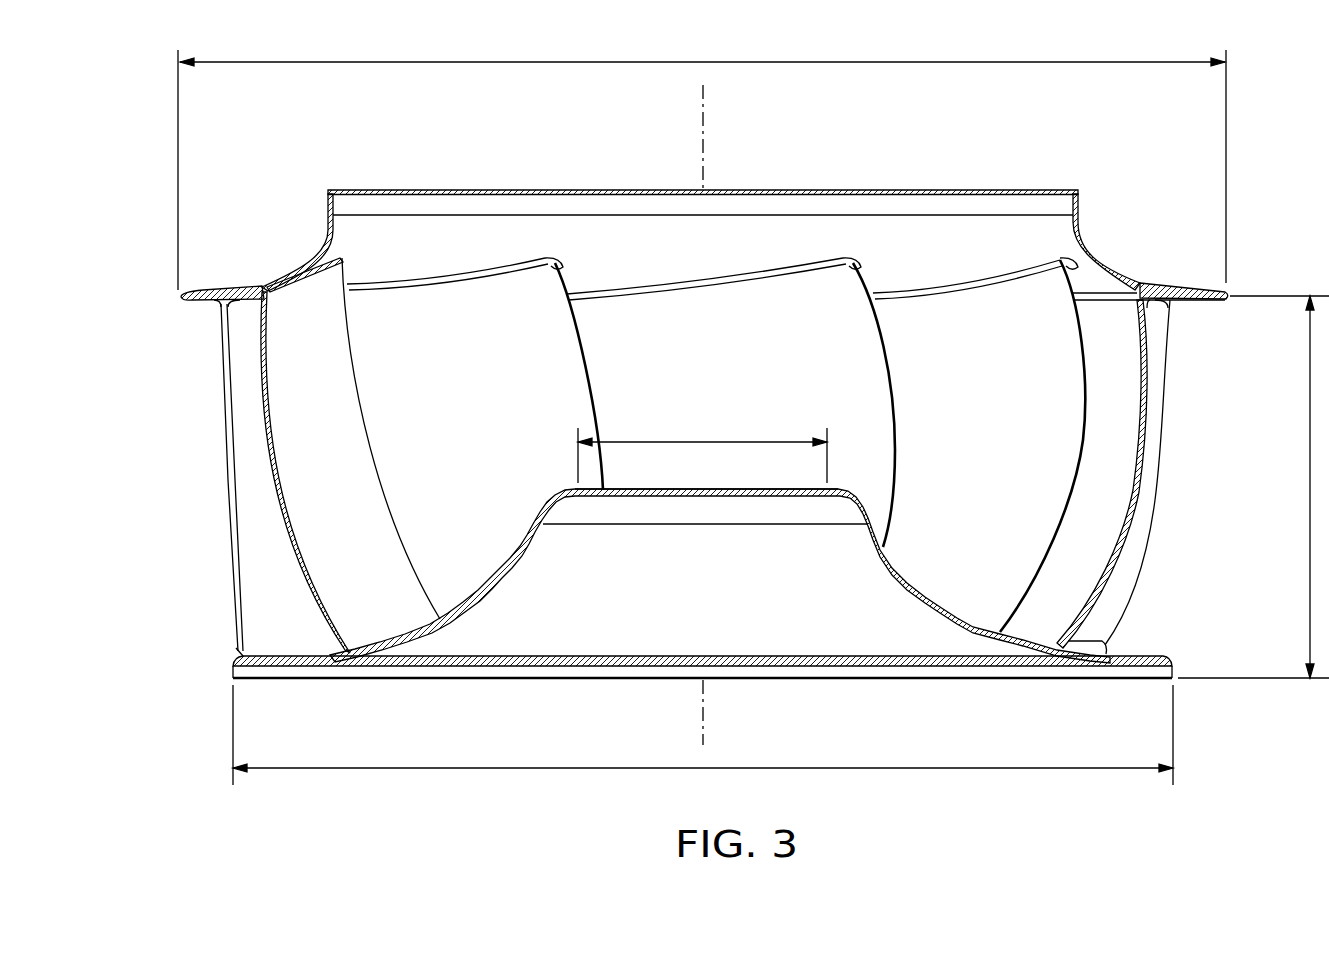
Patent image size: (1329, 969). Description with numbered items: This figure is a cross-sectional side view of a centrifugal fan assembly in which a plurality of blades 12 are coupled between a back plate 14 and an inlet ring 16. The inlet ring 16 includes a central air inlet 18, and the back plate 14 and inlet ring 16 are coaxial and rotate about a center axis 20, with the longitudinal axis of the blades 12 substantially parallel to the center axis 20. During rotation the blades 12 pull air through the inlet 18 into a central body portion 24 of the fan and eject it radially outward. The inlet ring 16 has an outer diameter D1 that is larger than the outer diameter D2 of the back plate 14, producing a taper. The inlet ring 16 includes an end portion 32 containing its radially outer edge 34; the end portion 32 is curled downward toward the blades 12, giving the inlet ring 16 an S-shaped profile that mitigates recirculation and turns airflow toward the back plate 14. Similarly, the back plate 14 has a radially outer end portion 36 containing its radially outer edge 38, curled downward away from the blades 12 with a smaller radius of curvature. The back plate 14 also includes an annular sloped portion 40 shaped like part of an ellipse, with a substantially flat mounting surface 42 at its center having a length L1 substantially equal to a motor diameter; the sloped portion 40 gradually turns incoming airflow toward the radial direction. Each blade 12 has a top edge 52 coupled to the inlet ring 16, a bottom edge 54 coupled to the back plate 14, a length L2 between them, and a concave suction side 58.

The blades 12 is at (1157, 370).
The back plate 14 is at (1140, 645).
The inlet ring 16 is at (1095, 242).
The central air inlet 18 is at (445, 228).
The center axis 20 is at (703, 108).
The central body portion 24 is at (838, 316).
The end portion 32 is at (203, 275).
The radially outer edge 34 is at (182, 296).
The radially outer end portion 36 is at (238, 648).
The radially outer edge 38 is at (233, 680).
The annular sloped portion 40 is at (493, 578).
The mounting surface 42 is at (738, 489).
The top edge 52 is at (308, 268).
The bottom edge 54 is at (350, 647).
The concave suction side 58 is at (1133, 570).
The outer diameter D1 is at (475, 62).
The outer diameter D2 is at (487, 768).
The length L1 is at (675, 442).
The length L2 is at (1310, 456).